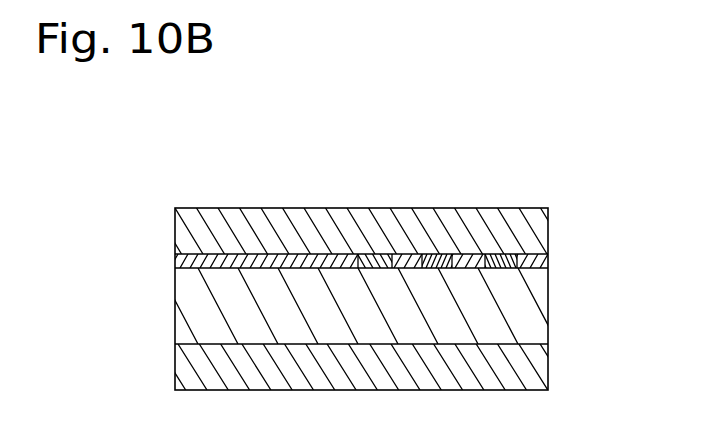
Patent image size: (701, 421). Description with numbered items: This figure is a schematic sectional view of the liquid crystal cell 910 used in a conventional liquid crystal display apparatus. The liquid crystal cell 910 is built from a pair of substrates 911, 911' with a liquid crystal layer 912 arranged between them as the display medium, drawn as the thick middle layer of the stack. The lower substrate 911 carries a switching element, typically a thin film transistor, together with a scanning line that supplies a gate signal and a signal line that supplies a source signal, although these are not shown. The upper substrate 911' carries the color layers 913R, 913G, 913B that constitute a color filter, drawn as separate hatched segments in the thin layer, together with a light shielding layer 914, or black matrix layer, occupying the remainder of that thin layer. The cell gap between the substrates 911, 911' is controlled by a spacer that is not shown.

The liquid crystal cell 910 is at (554, 61).
The substrate 911 is at (394, 367).
The substrate 911' is at (397, 231).
The liquid crystal layer 912 is at (532, 310).
The color layer 913R is at (374, 256).
The color layer 913G is at (435, 256).
The color layer 913B is at (502, 256).
The light shielding layer 914 is at (269, 256).